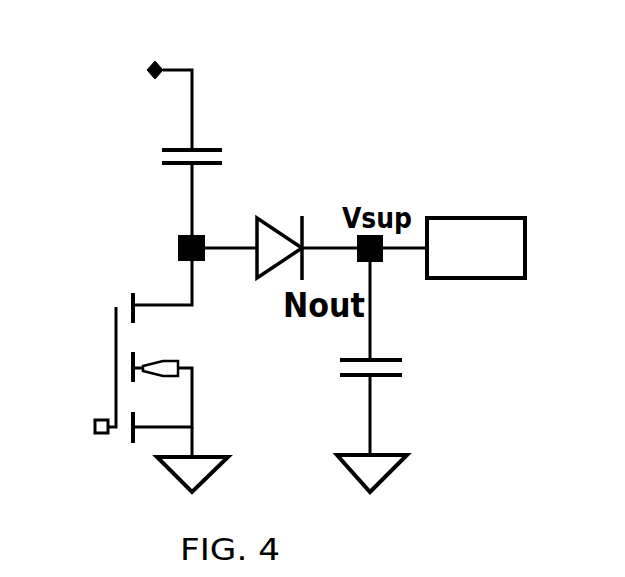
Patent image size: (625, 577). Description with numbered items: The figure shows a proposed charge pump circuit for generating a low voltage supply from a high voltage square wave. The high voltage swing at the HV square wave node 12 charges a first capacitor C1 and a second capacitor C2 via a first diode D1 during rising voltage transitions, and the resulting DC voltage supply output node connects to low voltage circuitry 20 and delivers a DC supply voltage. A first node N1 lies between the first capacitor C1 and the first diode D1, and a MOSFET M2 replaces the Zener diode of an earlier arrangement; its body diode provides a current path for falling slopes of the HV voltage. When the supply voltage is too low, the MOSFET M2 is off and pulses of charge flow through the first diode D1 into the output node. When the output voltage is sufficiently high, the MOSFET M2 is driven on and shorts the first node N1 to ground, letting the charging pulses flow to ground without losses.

The high voltage square wave node 12 is at (148, 70).
The low voltage circuitry 20 is at (512, 218).
The first capacitor C1 is at (206, 135).
The second capacitor C2 is at (385, 346).
The first diode D1 is at (281, 229).
The MOSFET M2 is at (146, 368).
The first node N1 is at (162, 237).